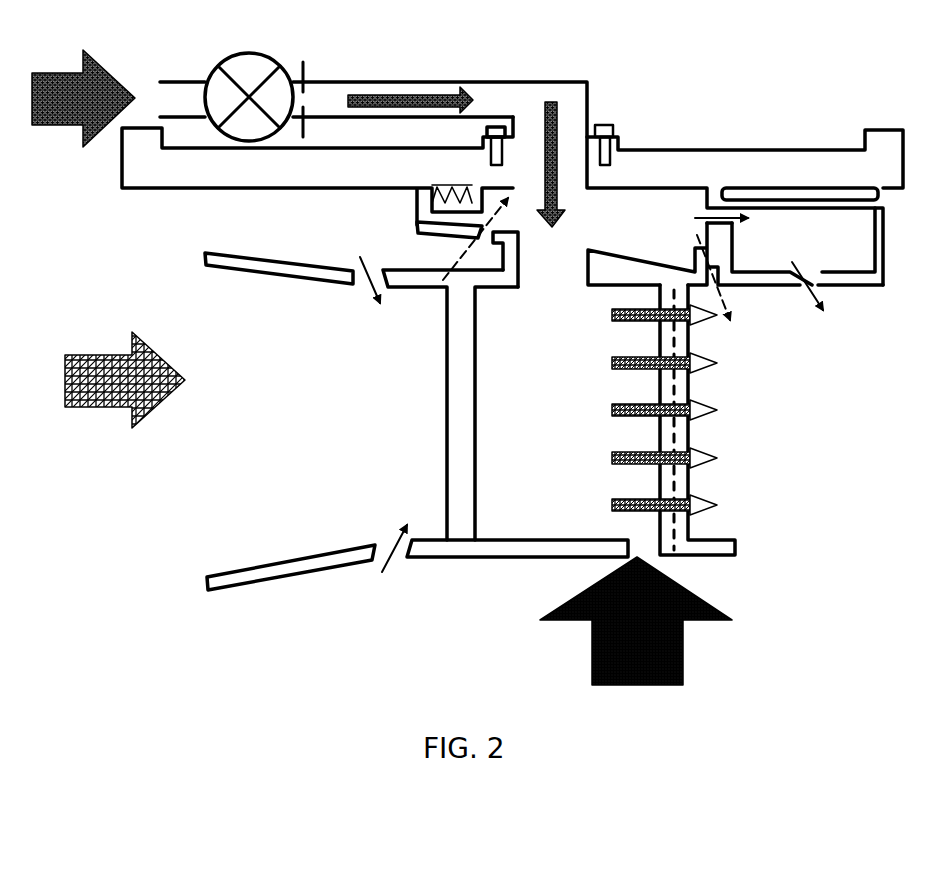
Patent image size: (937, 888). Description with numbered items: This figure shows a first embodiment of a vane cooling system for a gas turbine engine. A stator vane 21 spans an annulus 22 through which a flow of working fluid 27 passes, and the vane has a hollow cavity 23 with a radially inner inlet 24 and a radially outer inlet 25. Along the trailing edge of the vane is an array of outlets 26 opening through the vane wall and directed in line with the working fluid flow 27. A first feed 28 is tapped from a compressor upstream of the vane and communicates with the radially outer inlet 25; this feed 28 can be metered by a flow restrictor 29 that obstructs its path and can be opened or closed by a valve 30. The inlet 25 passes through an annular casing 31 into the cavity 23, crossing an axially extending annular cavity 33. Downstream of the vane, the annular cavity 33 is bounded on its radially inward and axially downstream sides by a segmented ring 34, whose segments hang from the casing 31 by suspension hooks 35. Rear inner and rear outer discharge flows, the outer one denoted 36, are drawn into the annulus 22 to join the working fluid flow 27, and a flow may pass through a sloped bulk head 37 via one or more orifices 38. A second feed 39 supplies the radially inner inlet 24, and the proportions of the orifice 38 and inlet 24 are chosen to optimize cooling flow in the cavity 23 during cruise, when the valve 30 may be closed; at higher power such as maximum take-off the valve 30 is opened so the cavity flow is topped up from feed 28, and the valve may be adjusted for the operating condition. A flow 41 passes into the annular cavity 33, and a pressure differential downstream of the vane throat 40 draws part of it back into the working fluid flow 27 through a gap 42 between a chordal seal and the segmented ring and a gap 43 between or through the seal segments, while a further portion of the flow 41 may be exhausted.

The stator vane 21 is at (447, 436).
The annulus 22 is at (288, 424).
The hollow cavity 23 is at (524, 334).
The radially inner inlet 24 is at (642, 548).
The radially outer inlet 25 is at (578, 137).
The array of outlets 26 is at (643, 448).
The flow of working fluid 27 is at (100, 370).
The first feed 28 is at (66, 96).
The flow restrictor 29 is at (310, 72).
The valve 30 is at (242, 62).
The annular casing 31 is at (668, 163).
The axially extending annular cavity 33 is at (637, 244).
The segmented ring 34 is at (880, 285).
The suspension hooks 35 is at (880, 193).
The rear outer discharge flow 36 is at (356, 262).
The sloped bulk head 37 is at (450, 224).
The orifice 38 is at (490, 242).
The second feed 39 is at (712, 320).
The vane throat 40 is at (676, 520).
The flow 41 is at (530, 214).
The gap between chordal seal and segmented ring 42 is at (722, 245).
The gap between or through seal segments 43 is at (804, 272).